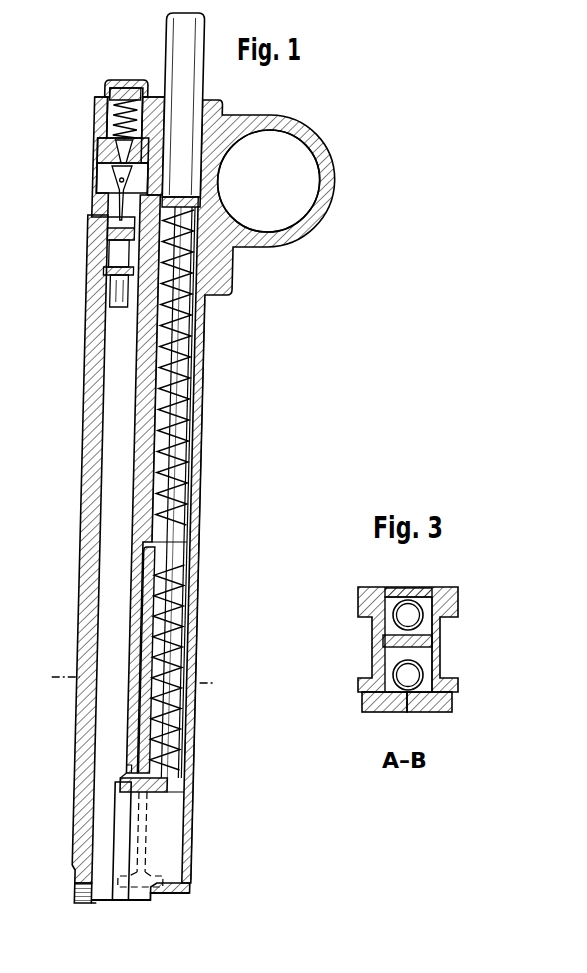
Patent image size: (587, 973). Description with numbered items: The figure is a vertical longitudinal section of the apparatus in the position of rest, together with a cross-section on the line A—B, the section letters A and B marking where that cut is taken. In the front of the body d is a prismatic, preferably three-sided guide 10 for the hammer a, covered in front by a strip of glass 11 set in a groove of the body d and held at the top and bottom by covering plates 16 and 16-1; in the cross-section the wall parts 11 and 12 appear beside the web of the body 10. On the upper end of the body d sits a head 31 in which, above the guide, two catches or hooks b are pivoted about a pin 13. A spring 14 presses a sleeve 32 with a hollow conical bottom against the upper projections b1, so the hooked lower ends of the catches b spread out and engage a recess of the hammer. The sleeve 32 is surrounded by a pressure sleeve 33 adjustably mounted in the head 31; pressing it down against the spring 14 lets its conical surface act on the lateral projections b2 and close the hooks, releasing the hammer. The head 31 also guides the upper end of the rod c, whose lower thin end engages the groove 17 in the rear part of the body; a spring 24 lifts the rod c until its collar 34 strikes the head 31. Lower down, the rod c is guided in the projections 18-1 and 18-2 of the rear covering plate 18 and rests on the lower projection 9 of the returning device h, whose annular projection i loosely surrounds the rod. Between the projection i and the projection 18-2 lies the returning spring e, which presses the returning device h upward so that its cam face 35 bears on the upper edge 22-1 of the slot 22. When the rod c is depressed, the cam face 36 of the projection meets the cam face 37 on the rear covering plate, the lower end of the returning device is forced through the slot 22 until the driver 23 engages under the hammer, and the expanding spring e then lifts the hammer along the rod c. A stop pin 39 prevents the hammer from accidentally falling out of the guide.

In FIG. 1, the guide 10 is at (126, 377).
In FIG. 3, the guide 10 is at (373, 680).
In FIG. 1, the strip of glass 11 is at (103, 452).
In FIG. 3, the strip of glass 11 is at (376, 700).
In FIG. 3, the tube wall section 12 is at (435, 705).
In FIG. 1, the pin 13 is at (147, 172).
In FIG. 1, the spring 14 is at (100, 96).
In FIG. 1, the covering plate 16 is at (123, 213).
In FIG. 1, the covering plate 16-1 is at (79, 915).
In FIG. 1, the groove 17 is at (202, 492).
In FIG. 3, the groove 17 is at (436, 633).
In FIG. 1, the rear covering plate 18 is at (204, 362).
In FIG. 1, the projection 18-1 is at (212, 527).
In FIG. 1, the projection 18-2 is at (208, 747).
In FIG. 1, the slot 22 is at (145, 827).
In FIG. 1, the upper edge of the slot 22-1 is at (150, 778).
In FIG. 1, the projection (driver) 23 is at (161, 793).
In FIG. 1, the spring 24 is at (191, 453).
In FIG. 1, the head 31 is at (250, 120).
In FIG. 1, the sleeve 32 is at (111, 133).
In FIG. 1, the pressure sleeve 33 is at (119, 80).
In FIG. 1, the collar 34 is at (210, 201).
In FIG. 1, the cam face 35 is at (148, 772).
In FIG. 1, the cam face 36 is at (209, 790).
In FIG. 1, the cam face 37 is at (181, 893).
In FIG. 1, the stop pin 39 is at (96, 887).
In FIG. 1, the plate 9 is at (177, 787).
In FIG. 1, the hammer a is at (125, 283).
In FIG. 1, the catches or hooks b is at (121, 250).
In FIG. 1, the projection b1 is at (116, 160).
In FIG. 1, the lateral projection b2 is at (121, 168).
In FIG. 1, the rod c is at (195, 607).
In FIG. 3, the rod c is at (412, 610).
In FIG. 1, the body d is at (156, 437).
In FIG. 3, the body d is at (426, 667).
In FIG. 1, the returning spring e is at (197, 712).
In FIG. 3, the returning spring e is at (402, 598).
In FIG. 1, the returning device h is at (166, 648).
In FIG. 3, the returning device h is at (392, 640).
In FIG. 1, the annular projection i is at (203, 560).
In FIG. 1, the section line A is at (55, 683).
In FIG. 1, the section line B is at (214, 685).